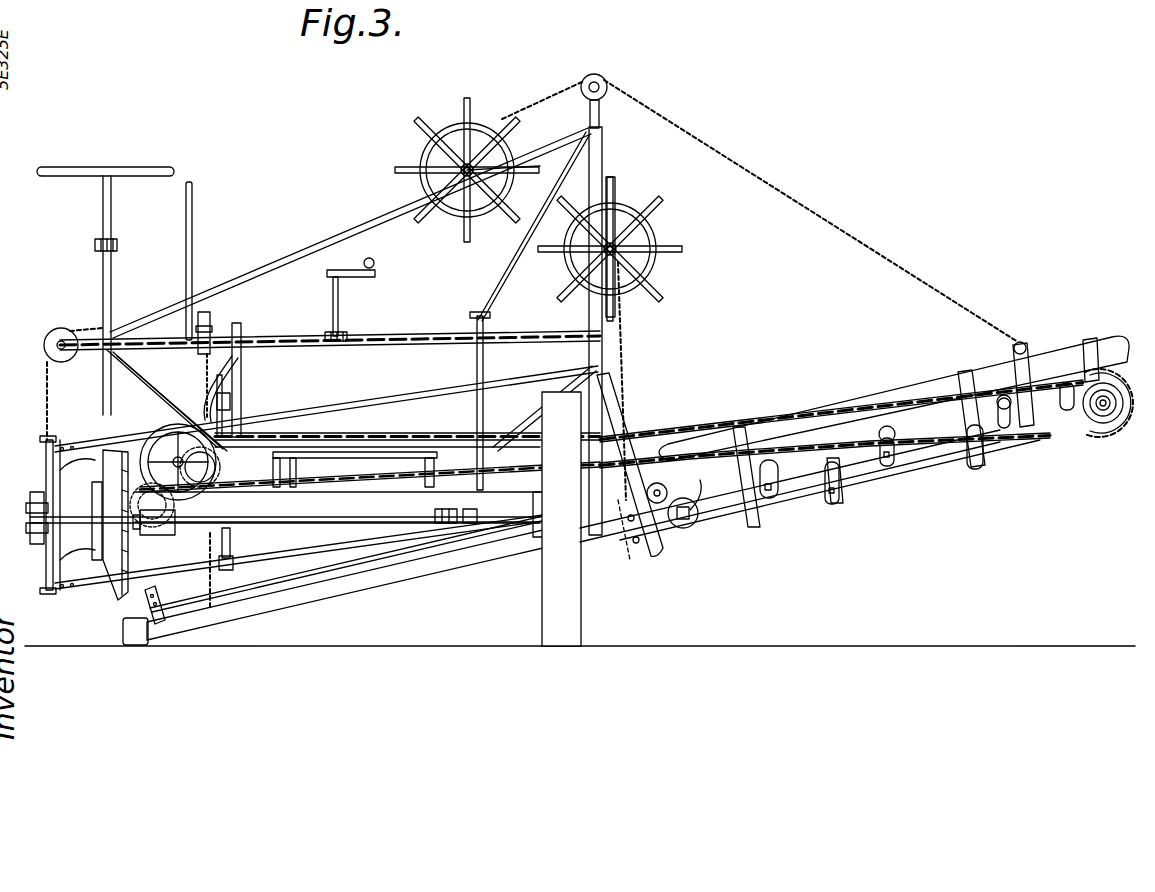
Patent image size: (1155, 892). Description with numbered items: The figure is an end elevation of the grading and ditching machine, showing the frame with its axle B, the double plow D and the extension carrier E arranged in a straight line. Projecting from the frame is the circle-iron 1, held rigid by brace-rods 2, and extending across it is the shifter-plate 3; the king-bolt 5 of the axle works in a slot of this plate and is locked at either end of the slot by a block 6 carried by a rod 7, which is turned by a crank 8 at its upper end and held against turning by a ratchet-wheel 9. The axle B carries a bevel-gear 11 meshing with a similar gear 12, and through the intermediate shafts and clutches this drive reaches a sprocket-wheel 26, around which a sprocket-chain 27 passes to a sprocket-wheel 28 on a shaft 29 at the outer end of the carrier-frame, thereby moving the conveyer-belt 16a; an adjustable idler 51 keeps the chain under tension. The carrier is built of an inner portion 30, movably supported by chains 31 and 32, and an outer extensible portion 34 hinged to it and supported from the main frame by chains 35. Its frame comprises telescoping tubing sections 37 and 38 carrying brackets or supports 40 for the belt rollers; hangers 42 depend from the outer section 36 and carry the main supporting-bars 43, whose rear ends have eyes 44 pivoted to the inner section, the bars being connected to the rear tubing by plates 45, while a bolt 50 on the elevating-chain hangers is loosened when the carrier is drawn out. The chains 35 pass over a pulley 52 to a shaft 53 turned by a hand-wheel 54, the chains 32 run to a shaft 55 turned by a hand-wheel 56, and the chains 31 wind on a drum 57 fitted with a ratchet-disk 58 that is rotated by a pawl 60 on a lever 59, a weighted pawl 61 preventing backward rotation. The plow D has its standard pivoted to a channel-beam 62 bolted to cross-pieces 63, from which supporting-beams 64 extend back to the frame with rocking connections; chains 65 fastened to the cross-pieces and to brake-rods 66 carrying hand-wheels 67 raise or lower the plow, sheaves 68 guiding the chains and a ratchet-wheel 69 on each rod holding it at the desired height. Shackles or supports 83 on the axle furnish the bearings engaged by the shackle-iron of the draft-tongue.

The circle-iron 1 is at (385, 445).
The brace-rods 2 is at (241, 380).
The shifter-plate 3 is at (355, 453).
The king-bolt 5 is at (290, 448).
The block 6 is at (304, 472).
The rod 7 is at (338, 300).
The crank 8 is at (358, 270).
The ratchet-wheel 9 is at (337, 332).
The bevel-gear 11 is at (132, 525).
The bevel-gear 12 is at (162, 526).
The conveyer-belt 16a is at (253, 596).
The sprocket-wheel 26 is at (196, 480).
The sprocket-chain 27 is at (720, 420).
The sprocket-wheel 28 is at (1108, 422).
The shaft 29 is at (218, 467).
The inner portion of carrier 30 is at (300, 600).
The chains 31 is at (208, 585).
The chains 32 is at (627, 383).
The outer extensible portion 34 is at (802, 487).
The elevating-chains 35 is at (912, 262).
The outer section of carrier 36 is at (864, 402).
The tubing section 37 is at (840, 475).
The tubing section 38 is at (1022, 346).
The brackets or supports 40 is at (780, 472).
The hangers 42 is at (740, 448).
The main supporting-bars 43 is at (782, 510).
The eyes 44 is at (682, 522).
The plates 45 is at (965, 455).
The bolt 50 is at (898, 462).
The adjustable idler 51 is at (627, 432).
The pulley 52 is at (600, 78).
The shaft 53 is at (425, 182).
The hand-wheel 54 is at (435, 156).
The shaft 55 is at (640, 258).
The hand-wheel 56 is at (645, 238).
The drum 57 is at (215, 318).
The ratchet-disk 58 is at (196, 329).
The lever 59 is at (192, 240).
The pawl 60 is at (203, 312).
The weighted pawl 61 is at (77, 515).
The channel-beam 62 is at (30, 520).
The cross-pieces 63 is at (46, 467).
The supporting-beams 64 is at (100, 442).
The chains 65 is at (47, 385).
The brake-rods 66 is at (111, 210).
The hand-wheels 67 is at (80, 170).
The sheaves 68 is at (60, 328).
The ratchet-wheel 69 is at (95, 243).
The shackles or supports 83 is at (172, 520).
The axle B is at (350, 525).
The plow D is at (77, 532).
The carrier E is at (881, 370).